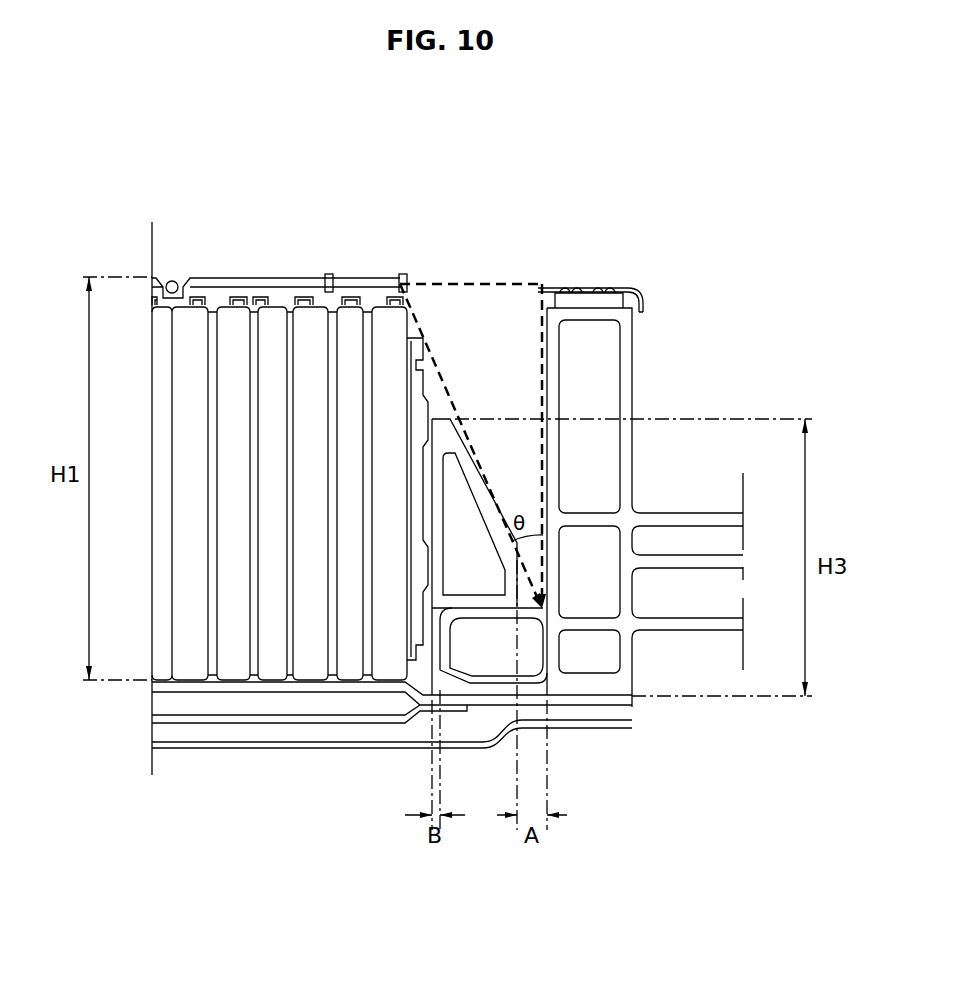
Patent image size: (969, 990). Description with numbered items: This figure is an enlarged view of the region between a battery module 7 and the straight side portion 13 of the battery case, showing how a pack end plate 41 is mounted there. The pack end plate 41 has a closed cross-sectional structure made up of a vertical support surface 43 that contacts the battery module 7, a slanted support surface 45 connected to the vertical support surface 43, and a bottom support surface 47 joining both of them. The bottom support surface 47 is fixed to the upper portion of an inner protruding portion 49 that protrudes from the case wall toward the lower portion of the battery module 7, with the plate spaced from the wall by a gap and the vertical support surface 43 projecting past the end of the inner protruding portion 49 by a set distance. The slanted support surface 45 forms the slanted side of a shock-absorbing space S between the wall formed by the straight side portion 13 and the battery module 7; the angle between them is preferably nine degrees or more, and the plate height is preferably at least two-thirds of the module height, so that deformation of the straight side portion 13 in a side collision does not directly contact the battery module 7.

The battery module 7 is at (215, 270).
The straight side portion 13 is at (632, 334).
The pack end plate 41 is at (396, 655).
The vertical support surface 43 is at (438, 507).
The slanted support surface 45 is at (492, 527).
The bottom support surface 47 is at (461, 743).
The inner protruding portion 49 is at (452, 645).
The shock-absorbing space S is at (469, 283).